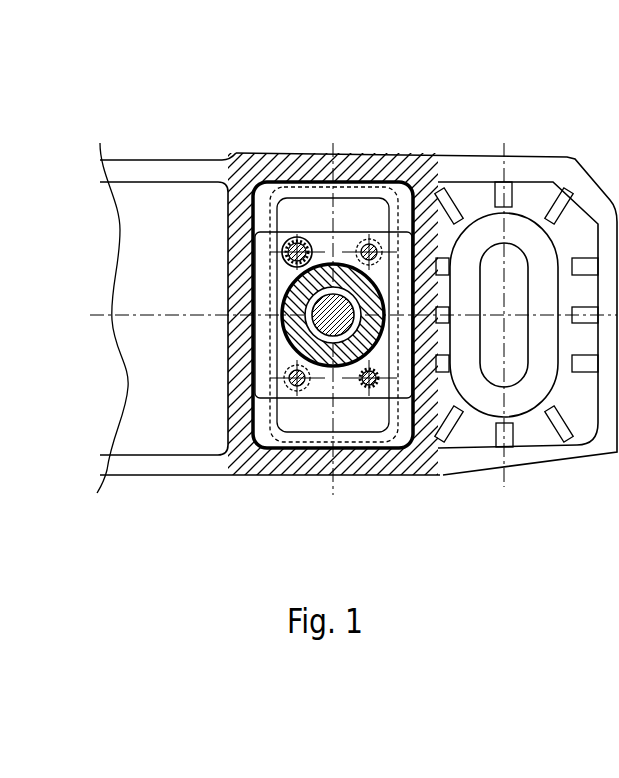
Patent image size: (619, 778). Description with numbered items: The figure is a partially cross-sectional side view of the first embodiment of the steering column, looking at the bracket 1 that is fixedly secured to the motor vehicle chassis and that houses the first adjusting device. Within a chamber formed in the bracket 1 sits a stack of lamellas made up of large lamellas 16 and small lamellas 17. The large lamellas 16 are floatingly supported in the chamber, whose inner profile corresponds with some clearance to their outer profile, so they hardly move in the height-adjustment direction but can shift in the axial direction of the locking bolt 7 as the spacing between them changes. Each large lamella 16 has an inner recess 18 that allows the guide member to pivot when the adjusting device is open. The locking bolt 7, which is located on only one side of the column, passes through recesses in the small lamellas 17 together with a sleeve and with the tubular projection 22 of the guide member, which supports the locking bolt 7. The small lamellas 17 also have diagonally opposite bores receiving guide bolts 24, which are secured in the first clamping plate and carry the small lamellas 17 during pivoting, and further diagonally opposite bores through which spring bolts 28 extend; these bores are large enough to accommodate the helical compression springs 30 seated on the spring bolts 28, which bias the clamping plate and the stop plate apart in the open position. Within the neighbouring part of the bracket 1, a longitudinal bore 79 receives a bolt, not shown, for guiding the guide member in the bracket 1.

The bracket 1 is at (162, 168).
The locking bolt 7 is at (343, 362).
The large lamellas 16 is at (362, 212).
The small lamellas 17 is at (342, 237).
The inner recess 18 is at (363, 212).
The tubular projection 22 is at (323, 363).
The guide bolts 24 is at (424, 164).
The spring bolts 28 is at (295, 240).
The compression springs 30 is at (299, 240).
The longitudinal bore 79 is at (517, 362).